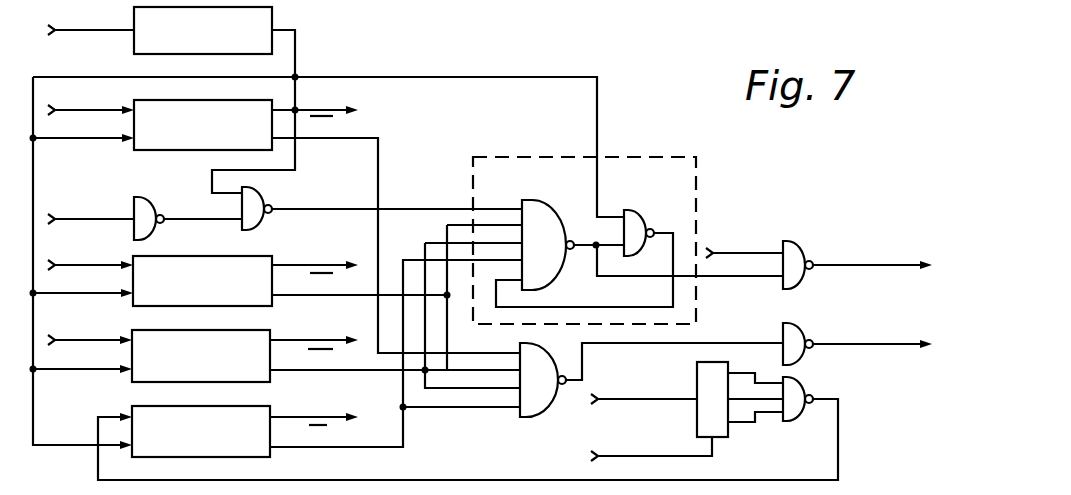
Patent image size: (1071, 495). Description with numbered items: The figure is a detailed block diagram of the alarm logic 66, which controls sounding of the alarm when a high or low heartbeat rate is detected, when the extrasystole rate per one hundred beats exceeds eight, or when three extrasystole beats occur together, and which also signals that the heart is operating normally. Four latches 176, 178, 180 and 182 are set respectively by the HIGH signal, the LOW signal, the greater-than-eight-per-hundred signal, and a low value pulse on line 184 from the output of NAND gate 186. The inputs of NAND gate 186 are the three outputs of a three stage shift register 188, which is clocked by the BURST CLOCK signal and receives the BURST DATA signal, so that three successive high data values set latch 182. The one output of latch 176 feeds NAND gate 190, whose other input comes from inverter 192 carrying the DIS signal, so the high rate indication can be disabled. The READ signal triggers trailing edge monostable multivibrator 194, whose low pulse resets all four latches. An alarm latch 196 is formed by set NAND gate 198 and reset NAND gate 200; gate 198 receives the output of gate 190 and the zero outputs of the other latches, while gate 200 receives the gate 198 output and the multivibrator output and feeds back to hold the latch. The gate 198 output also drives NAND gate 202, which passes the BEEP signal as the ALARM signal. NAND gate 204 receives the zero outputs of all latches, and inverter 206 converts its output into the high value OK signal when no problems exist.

The alarm logic 66 is at (683, 117).
The trailing edge monostable multivibrator 194 is at (128, 42).
The latch 176 is at (130, 150).
The latch 178 is at (170, 253).
The latch 180 is at (128, 382).
The latch 182 is at (168, 404).
The inverter 192 is at (163, 185).
The NAND gate 190 is at (262, 188).
The alarm latch 196 is at (696, 170).
The set NAND gate 198 is at (555, 275).
The reset NAND gate 200 is at (635, 211).
The NAND gate 202 is at (802, 240).
The inverter 206 is at (790, 323).
The NAND gate 204 is at (530, 418).
The three stage shift register 188 is at (722, 437).
The NAND gate 186 is at (800, 377).
The line 184 is at (838, 452).